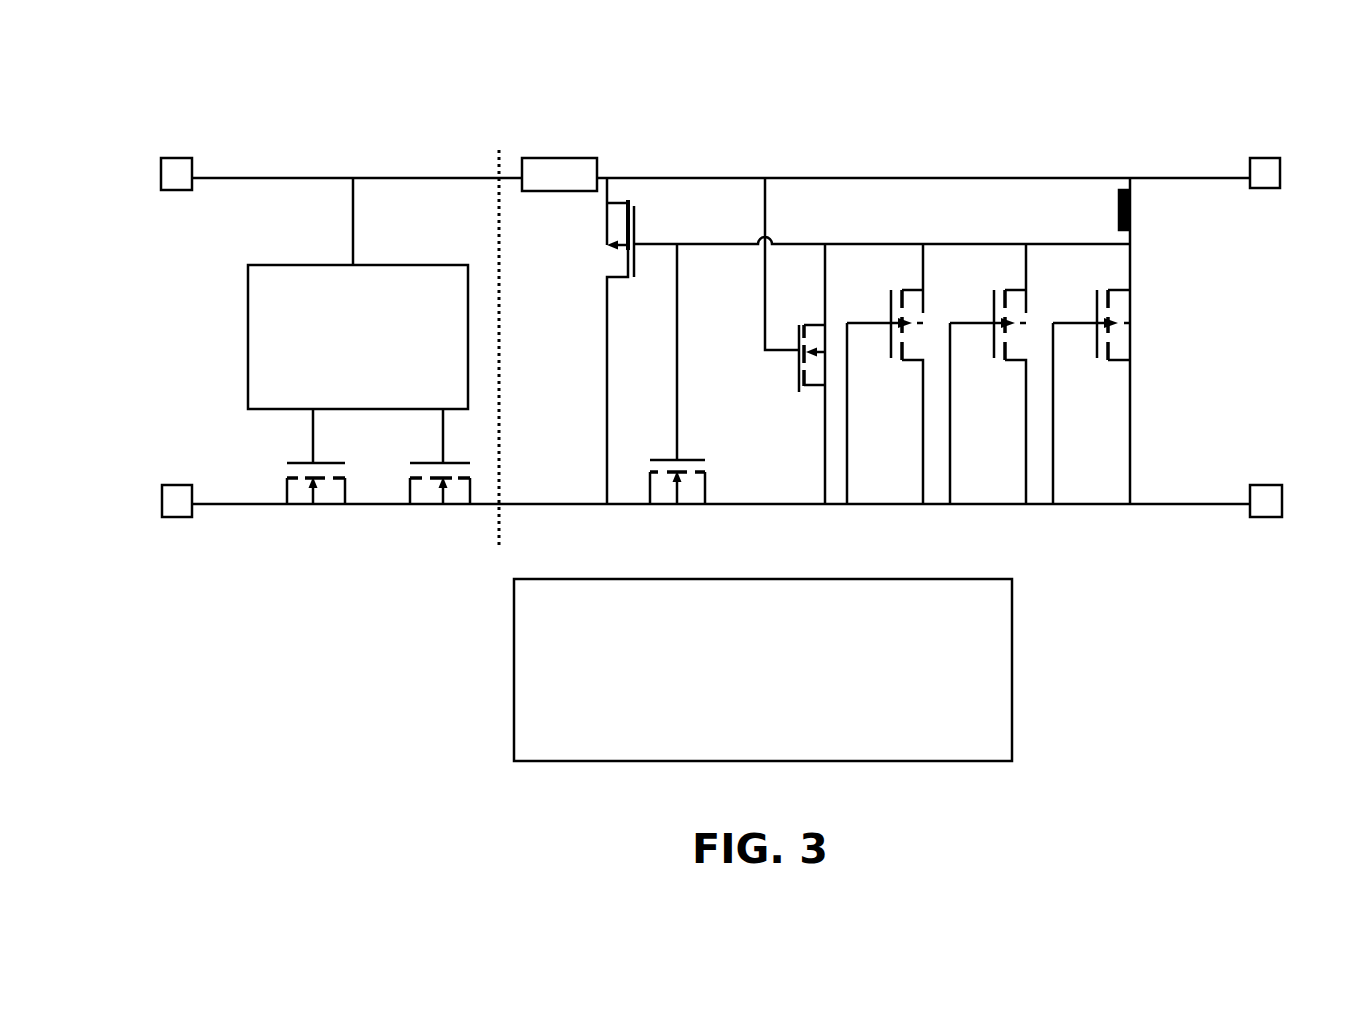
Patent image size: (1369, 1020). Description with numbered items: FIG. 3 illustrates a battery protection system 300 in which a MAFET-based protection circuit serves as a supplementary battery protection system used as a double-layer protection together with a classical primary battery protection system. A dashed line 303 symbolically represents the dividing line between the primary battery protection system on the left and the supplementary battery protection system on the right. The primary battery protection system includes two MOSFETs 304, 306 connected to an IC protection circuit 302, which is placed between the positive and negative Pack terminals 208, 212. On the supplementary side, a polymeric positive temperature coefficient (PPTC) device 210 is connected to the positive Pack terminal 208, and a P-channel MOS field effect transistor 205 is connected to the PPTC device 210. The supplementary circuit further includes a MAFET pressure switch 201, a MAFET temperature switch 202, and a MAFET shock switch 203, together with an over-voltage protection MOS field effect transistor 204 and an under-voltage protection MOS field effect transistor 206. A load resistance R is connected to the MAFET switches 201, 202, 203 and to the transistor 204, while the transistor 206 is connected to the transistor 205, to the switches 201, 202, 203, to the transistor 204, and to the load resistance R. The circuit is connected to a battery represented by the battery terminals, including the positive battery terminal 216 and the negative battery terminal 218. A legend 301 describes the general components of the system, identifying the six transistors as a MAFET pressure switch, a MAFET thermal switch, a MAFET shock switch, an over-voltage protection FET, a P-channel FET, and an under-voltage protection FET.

The battery protection system 300 is at (196, 100).
The legend 301 is at (1012, 663).
The IC protection circuit 302 is at (385, 311).
The dashed line 303 is at (499, 165).
The MOSFET 304 is at (280, 492).
The MOSFET 306 is at (403, 492).
The polymeric positive temperature coefficient (PPTC) device 210 is at (537, 162).
The MOS field effect transistor 205 is at (618, 195).
The MOS field effect transistor 204 is at (802, 312).
The MAFET shock switch 203 is at (905, 275).
The MAFET temperature switch 202 is at (1008, 275).
The MAFET pressure switch 201 is at (1108, 275).
The MOS field effect transistor 206 is at (718, 487).
The positive Pack terminal 208 is at (178, 195).
The negative Pack terminal 212 is at (175, 485).
The battery terminal 216 is at (1257, 195).
The BAT- terminal 218 is at (1261, 485).